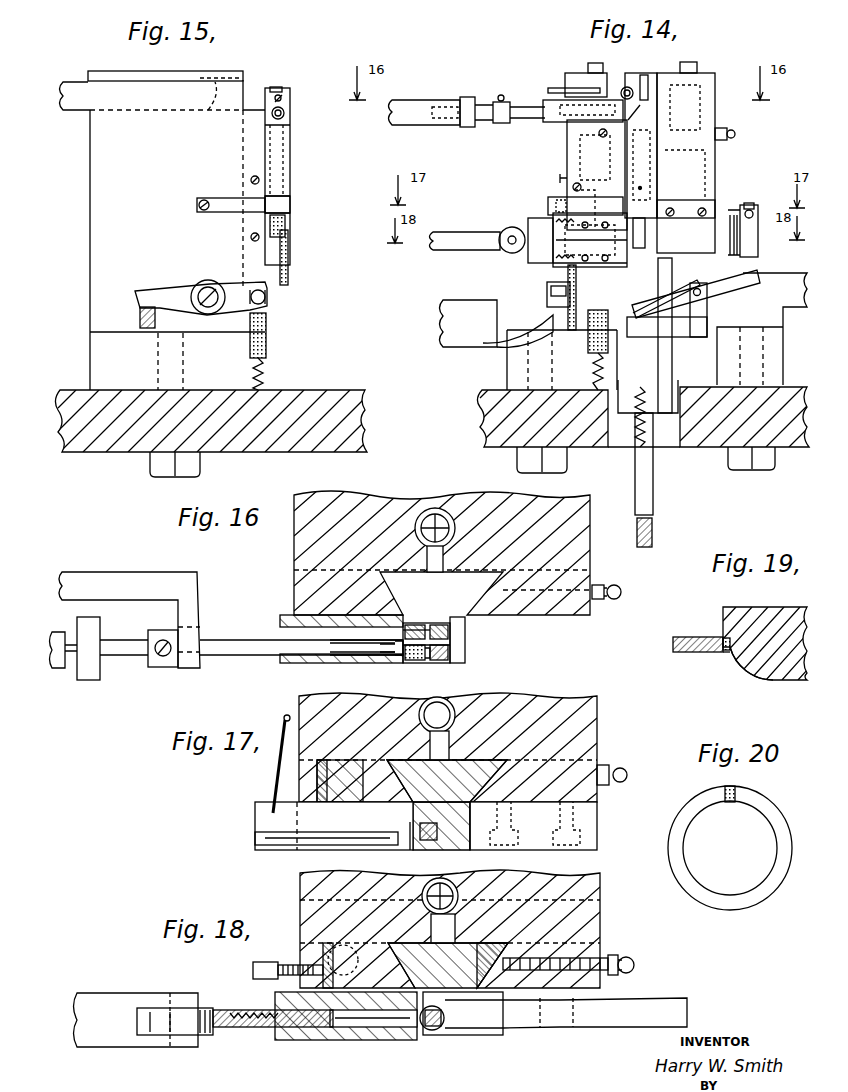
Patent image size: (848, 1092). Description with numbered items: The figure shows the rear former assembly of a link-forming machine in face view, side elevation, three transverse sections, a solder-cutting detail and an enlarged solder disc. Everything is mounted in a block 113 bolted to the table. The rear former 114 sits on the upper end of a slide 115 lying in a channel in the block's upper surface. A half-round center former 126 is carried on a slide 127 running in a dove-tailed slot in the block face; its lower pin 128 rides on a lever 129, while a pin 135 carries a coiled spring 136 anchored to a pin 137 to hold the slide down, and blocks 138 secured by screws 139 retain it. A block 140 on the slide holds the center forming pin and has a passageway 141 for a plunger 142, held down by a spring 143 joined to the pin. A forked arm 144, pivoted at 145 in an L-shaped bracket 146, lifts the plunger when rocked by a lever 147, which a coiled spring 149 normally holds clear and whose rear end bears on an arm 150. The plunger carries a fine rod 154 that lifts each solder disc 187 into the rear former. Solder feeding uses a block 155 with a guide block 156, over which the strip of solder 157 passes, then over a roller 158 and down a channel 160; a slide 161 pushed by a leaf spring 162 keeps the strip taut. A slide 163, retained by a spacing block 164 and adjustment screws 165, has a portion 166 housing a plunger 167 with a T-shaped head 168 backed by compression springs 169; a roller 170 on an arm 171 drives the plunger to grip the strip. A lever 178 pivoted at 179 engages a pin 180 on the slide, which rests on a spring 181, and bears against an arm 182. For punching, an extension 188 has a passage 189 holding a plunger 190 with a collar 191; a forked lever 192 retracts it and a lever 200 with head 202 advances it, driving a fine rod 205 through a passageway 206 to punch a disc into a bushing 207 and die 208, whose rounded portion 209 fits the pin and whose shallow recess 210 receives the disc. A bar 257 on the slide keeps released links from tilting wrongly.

In FIG. 15, the block 113 is at (92, 232).
In FIG. 16, the block 113 is at (580, 555).
In FIG. 17, the block 113 is at (575, 715).
In FIG. 18, the block 113 is at (305, 886).
In FIG. 15, the rear former 114 is at (247, 78).
In FIG. 15, the slide 115 is at (70, 82).
In FIG. 14, the center former 126 is at (630, 88).
In FIG. 16, the center former 126 is at (440, 662).
In FIG. 14, the slide 127 is at (672, 385).
In FIG. 16, the slide 127 is at (467, 640).
In FIG. 18, the slide 127 is at (462, 982).
In FIG. 14, the pin 128 is at (655, 480).
In FIG. 14, the lever 129 is at (653, 525).
In FIG. 16, the pin 135 is at (437, 508).
In FIG. 16, the coiled spring 136 is at (447, 512).
In FIG. 17, the pin 137 is at (485, 858).
In FIG. 18, the blocks 138 is at (570, 942).
In FIG. 18, the screws 139 is at (622, 957).
In FIG. 14, the block 140 is at (662, 158).
In FIG. 16, the block 140 is at (455, 660).
In FIG. 14, the passageway 141 is at (641, 188).
In FIG. 14, the plunger 142 is at (660, 222).
In FIG. 17, the plunger 142 is at (437, 840).
In FIG. 14, the spring 143 is at (637, 440).
In FIG. 14, the arm 144 is at (680, 286).
In FIG. 18, the arm 144 is at (636, 1005).
In FIG. 14, the pivot 145 is at (697, 288).
In FIG. 14, the L-shaped bracket 146 is at (707, 322).
In FIG. 14, the lever 147 is at (760, 252).
In FIG. 14, the coiled spring 149 is at (725, 280).
In FIG. 14, the arm 150 is at (795, 306).
In FIG. 14, the fine rod 154 is at (633, 122).
In FIG. 16, the fine rod 154 is at (435, 625).
In FIG. 15, the block 155 is at (291, 150).
In FIG. 14, the block 155 is at (567, 142).
In FIG. 16, the block 155 is at (295, 663).
In FIG. 15, the guide block 156 is at (284, 98).
In FIG. 14, the guide block 156 is at (585, 88).
In FIG. 15, the strip of solder 157 is at (285, 89).
In FIG. 14, the strip of solder 157 is at (548, 90).
In FIG. 16, the strip of solder 157 is at (410, 662).
In FIG. 17, the strip of solder 157 is at (410, 840).
In FIG. 18, the strip of solder 157 is at (420, 1030).
In FIG. 14, the roller 158 is at (624, 87).
In FIG. 14, the channel 160 is at (558, 118).
In FIG. 16, the channel 160 is at (405, 623).
In FIG. 15, the slide 161 is at (292, 204).
In FIG. 14, the slide 161 is at (555, 200).
In FIG. 17, the slide 161 is at (265, 800).
In FIG. 15, the leaf spring 162 is at (224, 198).
In FIG. 17, the leaf spring 162 is at (280, 745).
In FIG. 15, the slide 163 is at (268, 326).
In FIG. 14, the slide 163 is at (575, 278).
In FIG. 18, the slide 163 is at (328, 945).
In FIG. 18, the spacing block 164 is at (330, 952).
In FIG. 18, the adjustment screws 165 is at (270, 978).
In FIG. 14, the portion 166 is at (542, 240).
In FIG. 18, the portion 166 is at (330, 1040).
In FIG. 14, the plunger 167 is at (556, 263).
In FIG. 18, the plunger 167 is at (350, 1025).
In FIG. 15, the T-shaped head 168 is at (290, 228).
In FIG. 14, the T-shaped head 168 is at (556, 248).
In FIG. 18, the T-shaped head 168 is at (230, 1028).
In FIG. 14, the compression springs 169 is at (553, 222).
In FIG. 18, the compression springs 169 is at (262, 1028).
In FIG. 14, the roller 170 is at (500, 247).
In FIG. 18, the roller 170 is at (165, 1036).
In FIG. 14, the arm 171 is at (462, 232).
In FIG. 18, the arm 171 is at (108, 1048).
In FIG. 15, the lever 178 is at (172, 290).
In FIG. 14, the lever 178 is at (555, 322).
In FIG. 15, the pivot 179 is at (212, 283).
In FIG. 15, the pin 180 is at (267, 298).
In FIG. 14, the pin 180 is at (547, 296).
In FIG. 15, the spring 181 is at (267, 370).
In FIG. 14, the spring 181 is at (595, 370).
In FIG. 15, the arm 182 is at (140, 312).
In FIG. 14, the arm 182 is at (452, 317).
In FIG. 19, the disc 187 is at (723, 640).
In FIG. 20, the disc 187 is at (735, 790).
In FIG. 14, the extension 188 is at (470, 127).
In FIG. 14, the passage 189 is at (543, 105).
In FIG. 16, the passage 189 is at (352, 663).
In FIG. 15, the plunger 190 is at (285, 114).
In FIG. 14, the plunger 190 is at (478, 125).
In FIG. 16, the plunger 190 is at (325, 655).
In FIG. 16, the collar 191 is at (160, 668).
In FIG. 16, the lever 192 is at (198, 597).
In FIG. 16, the lever 200 is at (60, 670).
In FIG. 16, the head 202 is at (88, 680).
In FIG. 16, the fine rod 205 is at (388, 660).
In FIG. 19, the fine rod 205 is at (683, 637).
In FIG. 16, the passageway 206 is at (398, 660).
In FIG. 16, the bushing 207 is at (428, 658).
In FIG. 16, the die 208 is at (467, 655).
In FIG. 19, the die 208 is at (776, 612).
In FIG. 19, the rounded portion 209 is at (752, 668).
In FIG. 19, the shallow recess 210 is at (727, 655).
In FIG. 14, the bar 257 is at (646, 74).